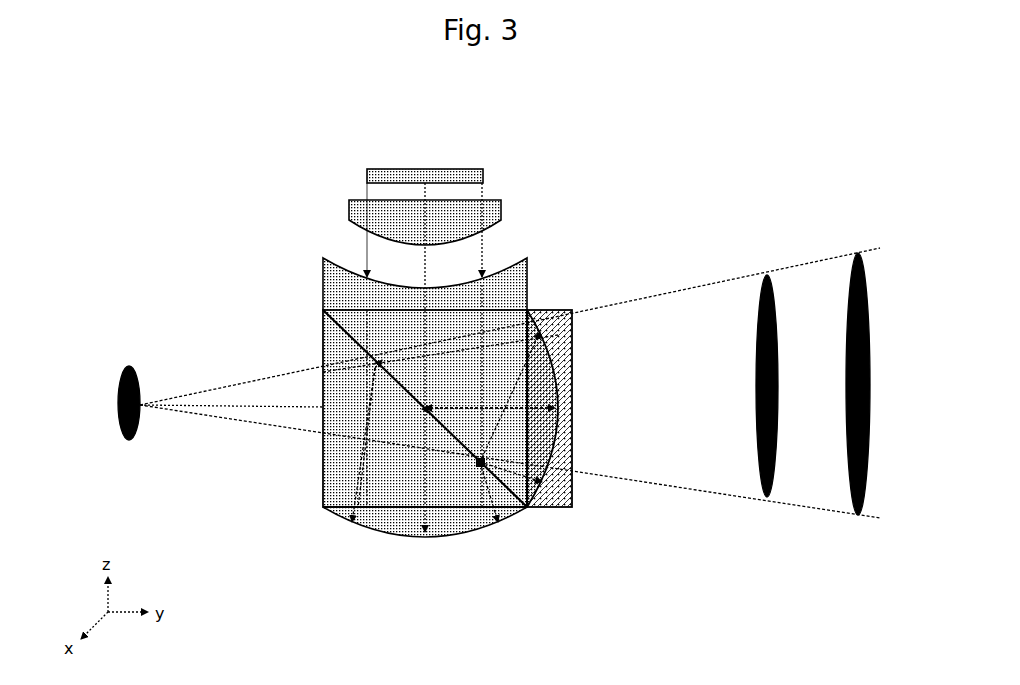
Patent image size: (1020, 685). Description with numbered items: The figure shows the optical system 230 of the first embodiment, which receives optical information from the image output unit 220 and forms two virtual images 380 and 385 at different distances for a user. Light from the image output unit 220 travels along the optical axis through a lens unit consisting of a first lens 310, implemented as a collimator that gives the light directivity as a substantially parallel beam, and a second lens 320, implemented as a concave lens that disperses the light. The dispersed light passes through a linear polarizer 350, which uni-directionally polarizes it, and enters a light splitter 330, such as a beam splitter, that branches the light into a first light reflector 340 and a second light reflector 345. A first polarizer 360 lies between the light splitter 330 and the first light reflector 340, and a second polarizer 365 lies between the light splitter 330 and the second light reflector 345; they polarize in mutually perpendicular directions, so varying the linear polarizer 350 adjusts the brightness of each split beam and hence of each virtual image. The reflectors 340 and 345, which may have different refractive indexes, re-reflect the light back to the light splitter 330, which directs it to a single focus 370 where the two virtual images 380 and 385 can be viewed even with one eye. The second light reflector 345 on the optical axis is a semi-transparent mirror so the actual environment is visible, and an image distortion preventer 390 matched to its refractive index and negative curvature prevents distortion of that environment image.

The image output unit 220 is at (483, 168).
The optical system 230 is at (242, 207).
The first lens 310 is at (500, 200).
The second lens 320 is at (527, 262).
The light splitter 330 is at (343, 333).
The first light reflector 340 is at (337, 513).
The second light reflector 345 is at (558, 440).
The linear polarizer 350 is at (503, 307).
The first polarizer 360 is at (470, 512).
The second polarizer 365 is at (565, 378).
The focus 370 is at (128, 365).
The virtual image 380 is at (765, 275).
The virtual image 385 is at (857, 253).
The image distortion preventer 390 is at (572, 508).